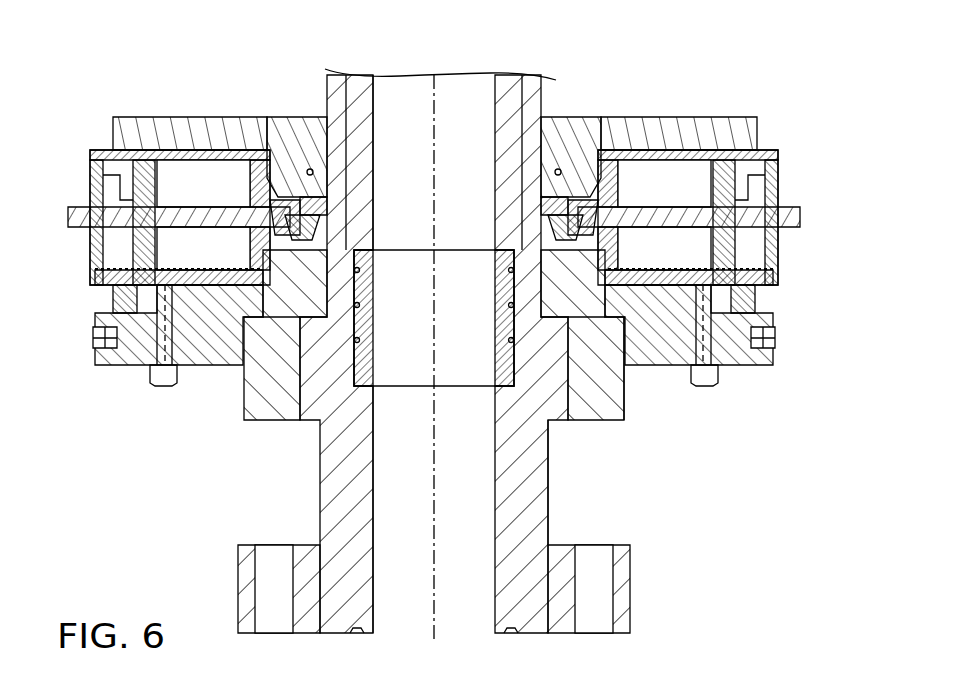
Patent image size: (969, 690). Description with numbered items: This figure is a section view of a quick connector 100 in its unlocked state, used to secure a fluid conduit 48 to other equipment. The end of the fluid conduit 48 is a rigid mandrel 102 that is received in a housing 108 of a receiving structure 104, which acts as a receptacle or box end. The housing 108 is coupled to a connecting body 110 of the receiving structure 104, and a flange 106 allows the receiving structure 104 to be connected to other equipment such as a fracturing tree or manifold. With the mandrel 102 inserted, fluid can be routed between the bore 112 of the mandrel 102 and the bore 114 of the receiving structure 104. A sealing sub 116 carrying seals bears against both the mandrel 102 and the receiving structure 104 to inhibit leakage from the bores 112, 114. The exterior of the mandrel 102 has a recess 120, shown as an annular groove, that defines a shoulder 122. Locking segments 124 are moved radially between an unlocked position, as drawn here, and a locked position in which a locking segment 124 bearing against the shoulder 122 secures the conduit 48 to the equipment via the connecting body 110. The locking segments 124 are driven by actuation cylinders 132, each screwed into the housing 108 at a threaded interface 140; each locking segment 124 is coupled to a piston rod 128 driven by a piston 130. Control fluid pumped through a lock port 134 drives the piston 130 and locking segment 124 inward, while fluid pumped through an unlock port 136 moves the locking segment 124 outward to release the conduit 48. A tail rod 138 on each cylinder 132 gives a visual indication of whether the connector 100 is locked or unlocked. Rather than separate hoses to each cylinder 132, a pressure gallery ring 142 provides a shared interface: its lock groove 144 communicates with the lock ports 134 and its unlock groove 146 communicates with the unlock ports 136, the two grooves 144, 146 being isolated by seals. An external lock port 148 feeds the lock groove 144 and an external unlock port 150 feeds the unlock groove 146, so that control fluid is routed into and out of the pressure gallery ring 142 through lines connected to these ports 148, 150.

The fluid conduit 48 is at (512, 52).
The quick connector 100 is at (213, 477).
The mandrel 102 is at (530, 120).
The receiving structure 104 is at (567, 437).
The flange 106 is at (623, 580).
The housing 108 is at (620, 377).
The connecting body 110 is at (538, 507).
The bore 112 is at (377, 160).
The bore 114 is at (373, 473).
The sealing sub 116 is at (367, 303).
The recess 120 is at (333, 173).
The shoulder 122 is at (320, 210).
The locking segment 124 is at (310, 177).
The piston rod 128 is at (186, 220).
The piston 130 is at (140, 191).
The actuation cylinder 132 is at (100, 150).
The lock port 134 is at (130, 280).
The unlock port 136 is at (232, 280).
The tail rod 138 is at (72, 215).
The threaded interface 140 is at (225, 135).
The pressure gallery ring 142 is at (120, 353).
The lock groove 144 is at (125, 320).
The unlock groove 146 is at (162, 287).
The external lock port 148 is at (93, 339).
The external unlock port 150 is at (770, 345).